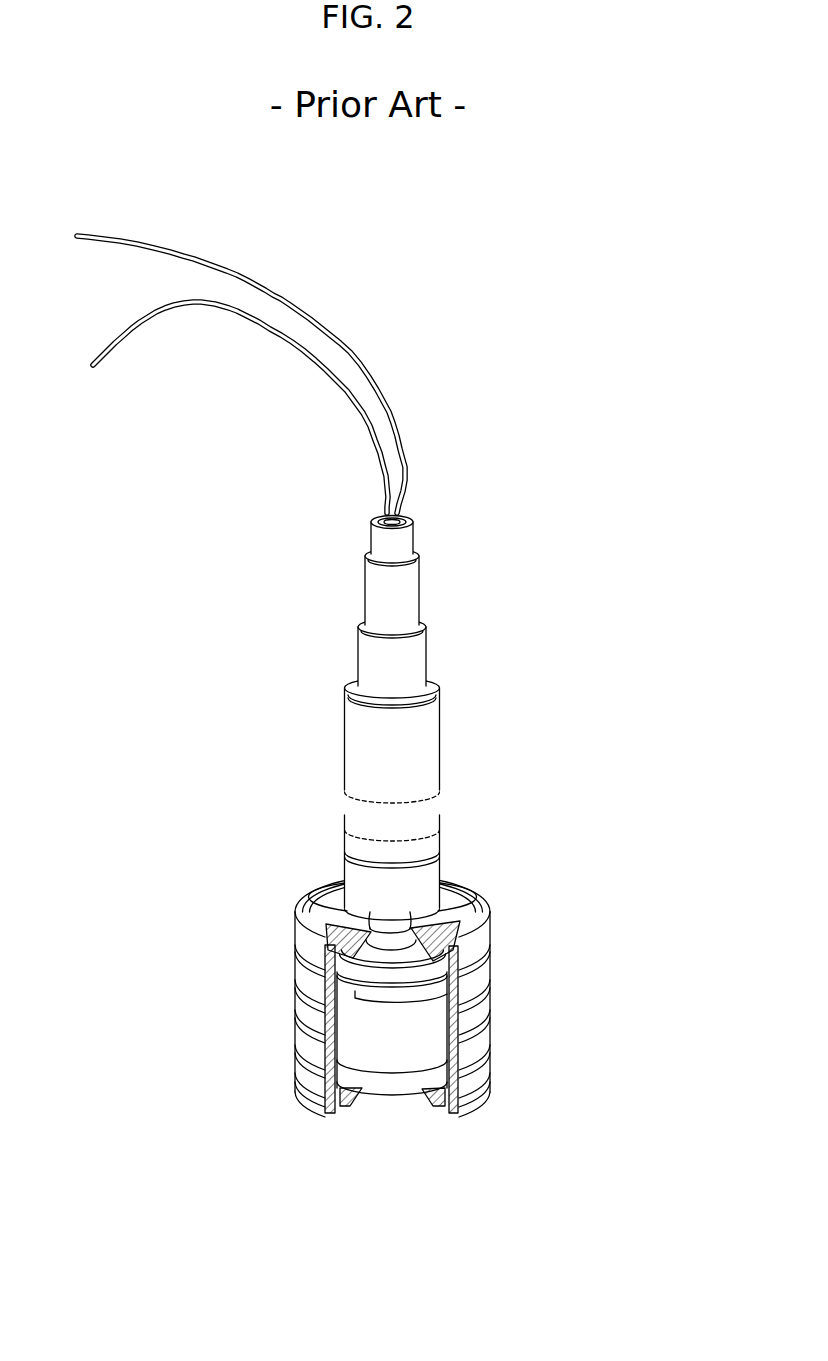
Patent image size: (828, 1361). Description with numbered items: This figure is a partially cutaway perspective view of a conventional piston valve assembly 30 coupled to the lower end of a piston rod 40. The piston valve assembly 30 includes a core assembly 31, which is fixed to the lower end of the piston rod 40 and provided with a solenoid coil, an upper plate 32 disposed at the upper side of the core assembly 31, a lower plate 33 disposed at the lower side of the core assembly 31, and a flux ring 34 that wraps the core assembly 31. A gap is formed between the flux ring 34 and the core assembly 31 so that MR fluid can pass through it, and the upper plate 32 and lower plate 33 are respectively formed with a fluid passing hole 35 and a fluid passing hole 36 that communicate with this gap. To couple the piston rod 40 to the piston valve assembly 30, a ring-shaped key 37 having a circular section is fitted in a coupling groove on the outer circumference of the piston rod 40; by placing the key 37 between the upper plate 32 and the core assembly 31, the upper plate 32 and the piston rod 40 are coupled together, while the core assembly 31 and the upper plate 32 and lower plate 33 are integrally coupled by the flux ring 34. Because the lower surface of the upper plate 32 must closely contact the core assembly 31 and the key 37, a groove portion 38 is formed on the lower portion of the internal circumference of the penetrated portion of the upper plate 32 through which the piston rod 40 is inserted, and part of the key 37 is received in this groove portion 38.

The piston valve assembly 30 is at (528, 976).
The core assembly 31 is at (358, 1023).
The upper plate 32 is at (307, 903).
The lower plate 33 is at (337, 1107).
The flux ring 34 is at (338, 1092).
The fluid passing hole 35 is at (330, 893).
The fluid passing hole 36 is at (445, 1107).
The key 37 is at (325, 930).
The groove portion 38 is at (455, 921).
The piston rod 40 is at (413, 742).